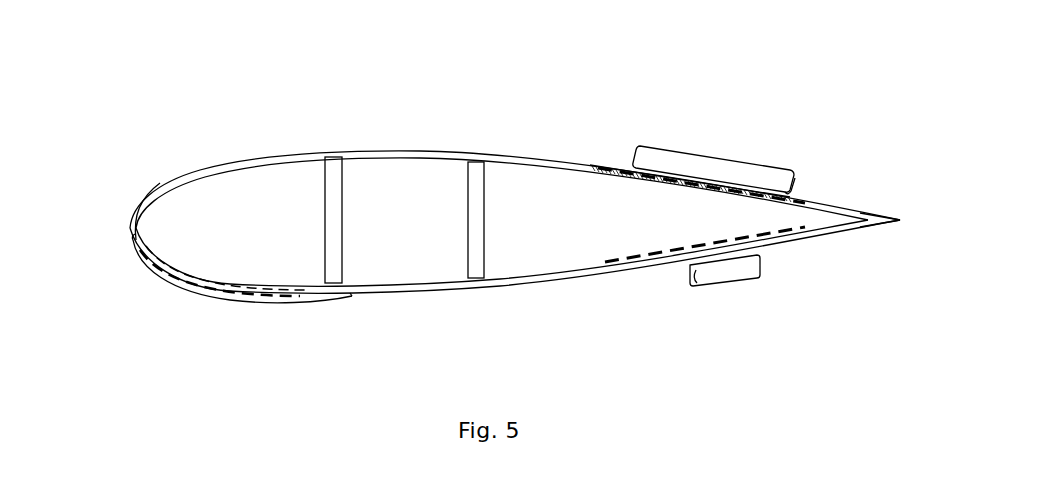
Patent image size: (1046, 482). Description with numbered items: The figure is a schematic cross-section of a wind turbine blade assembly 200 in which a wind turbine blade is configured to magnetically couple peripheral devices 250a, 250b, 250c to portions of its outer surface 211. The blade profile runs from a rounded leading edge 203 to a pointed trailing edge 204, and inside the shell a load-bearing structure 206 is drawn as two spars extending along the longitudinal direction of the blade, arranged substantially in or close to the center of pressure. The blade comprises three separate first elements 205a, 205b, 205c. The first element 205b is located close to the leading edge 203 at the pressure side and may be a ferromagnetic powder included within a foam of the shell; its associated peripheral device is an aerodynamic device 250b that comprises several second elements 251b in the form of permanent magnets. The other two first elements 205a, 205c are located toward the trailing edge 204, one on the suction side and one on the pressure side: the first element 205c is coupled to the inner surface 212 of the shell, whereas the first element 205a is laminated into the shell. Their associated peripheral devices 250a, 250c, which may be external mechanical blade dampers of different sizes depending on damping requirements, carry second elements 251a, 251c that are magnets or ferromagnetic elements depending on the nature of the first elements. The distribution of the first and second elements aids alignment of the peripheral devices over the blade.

The wind turbine blade assembly 200 is at (507, 150).
The leading edge 203 is at (130, 218).
The trailing edge 204 is at (901, 222).
The first element 205a is at (612, 178).
The first element 205b is at (258, 284).
The first element 205c is at (745, 242).
The load-bearing structure 206 is at (325, 215).
The outer surface 211 is at (392, 153).
The inner surface 212 is at (427, 281).
The peripheral device 250a is at (730, 160).
The aerodynamic device 250b is at (304, 302).
The peripheral device 250c is at (745, 282).
The second element 251a is at (790, 176).
The second element 251b is at (238, 302).
The second element 251c is at (697, 276).